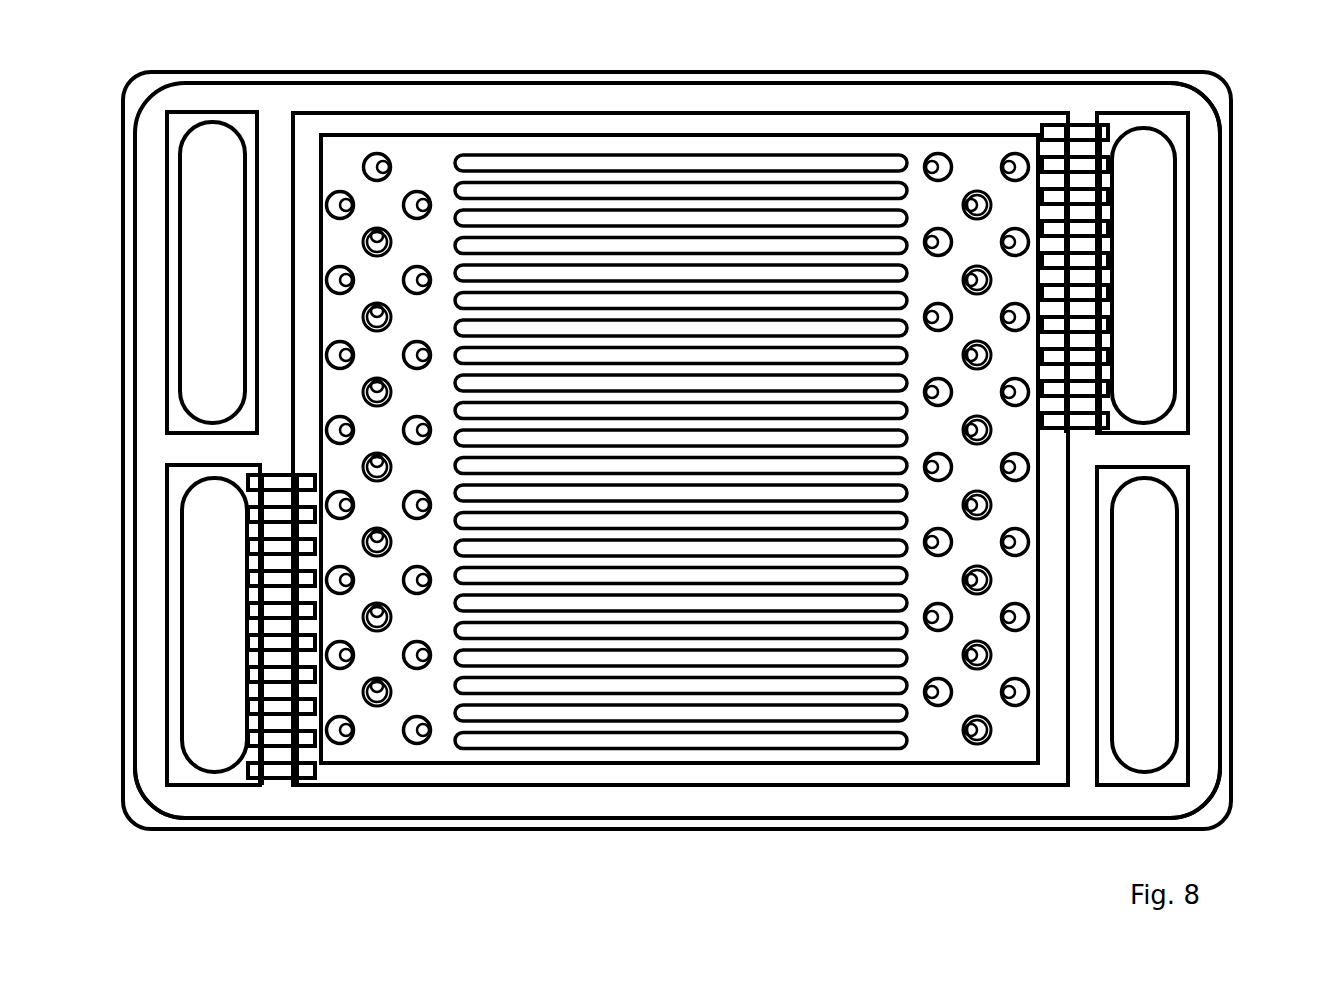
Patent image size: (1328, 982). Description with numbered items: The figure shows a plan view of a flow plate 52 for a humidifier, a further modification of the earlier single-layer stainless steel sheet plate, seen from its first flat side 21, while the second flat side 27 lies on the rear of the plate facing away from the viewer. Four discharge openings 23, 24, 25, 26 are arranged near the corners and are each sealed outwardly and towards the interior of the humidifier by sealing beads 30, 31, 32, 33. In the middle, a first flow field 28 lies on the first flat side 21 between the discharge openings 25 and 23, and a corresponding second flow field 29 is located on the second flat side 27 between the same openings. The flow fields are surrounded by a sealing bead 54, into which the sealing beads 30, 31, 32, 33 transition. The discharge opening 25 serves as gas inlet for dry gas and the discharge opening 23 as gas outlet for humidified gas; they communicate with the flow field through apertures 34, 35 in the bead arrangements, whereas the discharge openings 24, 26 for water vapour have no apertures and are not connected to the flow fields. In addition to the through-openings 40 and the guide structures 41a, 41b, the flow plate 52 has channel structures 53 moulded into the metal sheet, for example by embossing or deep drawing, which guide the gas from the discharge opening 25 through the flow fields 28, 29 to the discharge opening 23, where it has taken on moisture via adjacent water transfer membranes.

The first flat side 21 is at (913, 130).
The discharge opening 23 is at (232, 612).
The discharge opening 24 is at (1155, 626).
The discharge opening 25 is at (1153, 233).
The discharge opening 26 is at (228, 245).
The second flat side 27 is at (534, 58).
The first flow field 28 is at (930, 745).
The second flow field 29 is at (1016, 58).
The sealing bead 30 is at (213, 797).
The sealing bead 31 is at (1200, 750).
The sealing bead 32 is at (1168, 110).
The sealing bead 33 is at (193, 104).
The aperture 34 is at (228, 573).
The aperture 35 is at (1135, 298).
The through-opening 40 is at (428, 742).
The guide structure 41a is at (416, 745).
The guide structure 41b is at (993, 740).
The flow plate 52 is at (1236, 484).
The channel structure 53 is at (475, 195).
The sealing bead 54 is at (784, 107).